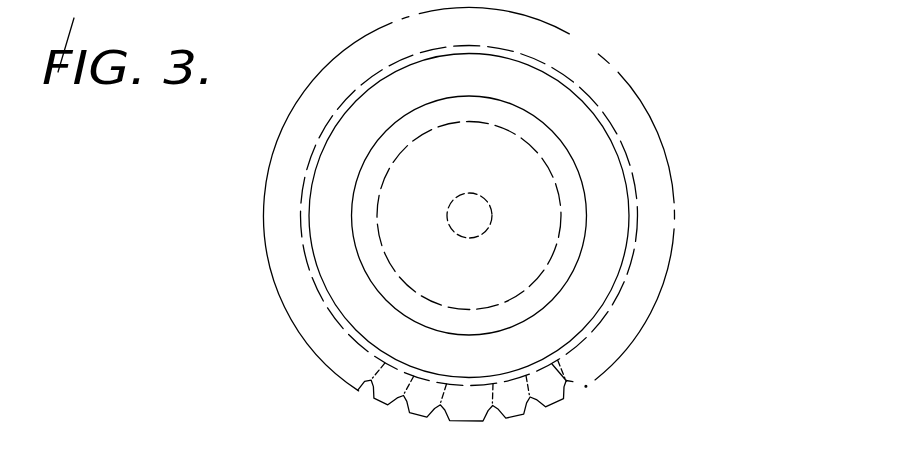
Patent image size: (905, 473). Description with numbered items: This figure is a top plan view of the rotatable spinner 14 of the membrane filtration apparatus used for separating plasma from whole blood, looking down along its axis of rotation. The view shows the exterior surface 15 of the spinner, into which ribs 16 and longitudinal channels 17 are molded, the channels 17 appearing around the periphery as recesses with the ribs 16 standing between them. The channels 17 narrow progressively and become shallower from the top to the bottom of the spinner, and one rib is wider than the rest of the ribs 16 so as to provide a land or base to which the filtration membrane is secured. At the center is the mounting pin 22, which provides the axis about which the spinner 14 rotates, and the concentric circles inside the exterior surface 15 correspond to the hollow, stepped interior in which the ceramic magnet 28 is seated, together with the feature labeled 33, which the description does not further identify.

The rotatable spinner 14 is at (692, 292).
The exterior surface 15 is at (570, 34).
The ribs 16 is at (549, 408).
The longitudinal channels 17 is at (400, 398).
The mounting pin 22 is at (448, 213).
The ceramic magnet 28 is at (358, 192).
The annular groove 33 is at (562, 202).